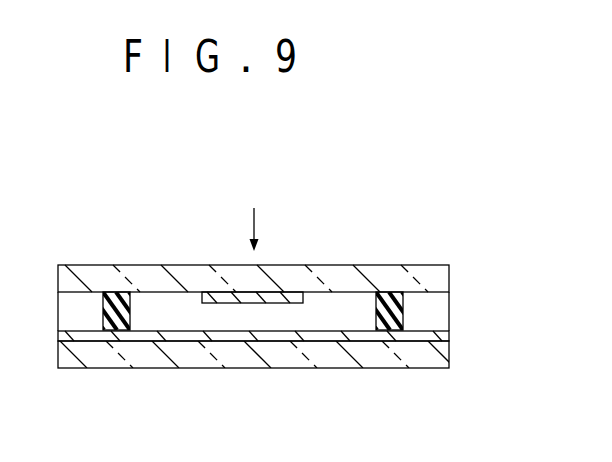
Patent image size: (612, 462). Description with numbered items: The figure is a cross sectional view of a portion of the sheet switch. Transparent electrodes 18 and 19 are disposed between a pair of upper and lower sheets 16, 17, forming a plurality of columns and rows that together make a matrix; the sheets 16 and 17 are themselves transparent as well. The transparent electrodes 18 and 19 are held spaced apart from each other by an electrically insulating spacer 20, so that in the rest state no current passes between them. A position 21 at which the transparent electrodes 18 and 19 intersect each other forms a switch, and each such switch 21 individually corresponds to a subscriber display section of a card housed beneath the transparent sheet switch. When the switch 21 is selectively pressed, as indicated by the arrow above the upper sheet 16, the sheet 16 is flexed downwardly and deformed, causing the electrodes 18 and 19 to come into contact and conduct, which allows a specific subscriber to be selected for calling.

The upper sheet 16 is at (416, 269).
The lower sheet 17 is at (330, 362).
The transparent electrode 18 is at (289, 298).
The transparent electrode 19 is at (230, 337).
The electrically insulating spacer 20 is at (403, 312).
The switch position 21 is at (383, 210).